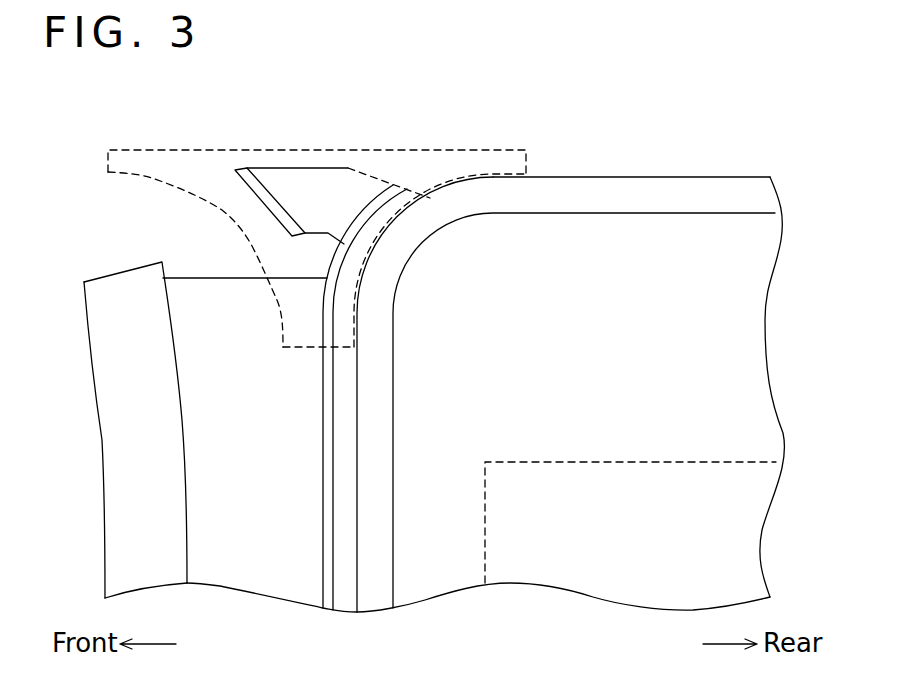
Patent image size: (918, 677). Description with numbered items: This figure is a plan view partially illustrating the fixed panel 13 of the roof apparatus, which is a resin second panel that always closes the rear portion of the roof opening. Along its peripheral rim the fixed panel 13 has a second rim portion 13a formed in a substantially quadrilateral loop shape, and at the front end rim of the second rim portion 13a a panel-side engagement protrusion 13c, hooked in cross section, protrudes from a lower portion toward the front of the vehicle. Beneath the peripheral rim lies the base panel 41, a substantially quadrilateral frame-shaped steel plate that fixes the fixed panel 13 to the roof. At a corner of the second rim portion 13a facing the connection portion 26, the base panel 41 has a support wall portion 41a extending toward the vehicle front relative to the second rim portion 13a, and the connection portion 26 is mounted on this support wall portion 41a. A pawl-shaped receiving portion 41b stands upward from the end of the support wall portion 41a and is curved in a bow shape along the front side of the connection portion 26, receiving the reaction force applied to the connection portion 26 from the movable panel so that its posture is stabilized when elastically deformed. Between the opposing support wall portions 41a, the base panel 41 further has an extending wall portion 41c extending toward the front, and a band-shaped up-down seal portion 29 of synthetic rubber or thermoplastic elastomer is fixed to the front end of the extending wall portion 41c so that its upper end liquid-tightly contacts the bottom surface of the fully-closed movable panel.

The fixed panel 13 is at (609, 171).
The second rim portion 13a is at (553, 177).
The panel-side engagement protrusion 13c is at (320, 572).
The connection portion 26 is at (200, 150).
The up-down seal portion 29 is at (118, 283).
The base panel 41 is at (591, 465).
The support wall portion 41a is at (308, 166).
The receiving portion 41b is at (268, 216).
The extending wall portion 41c is at (203, 284).